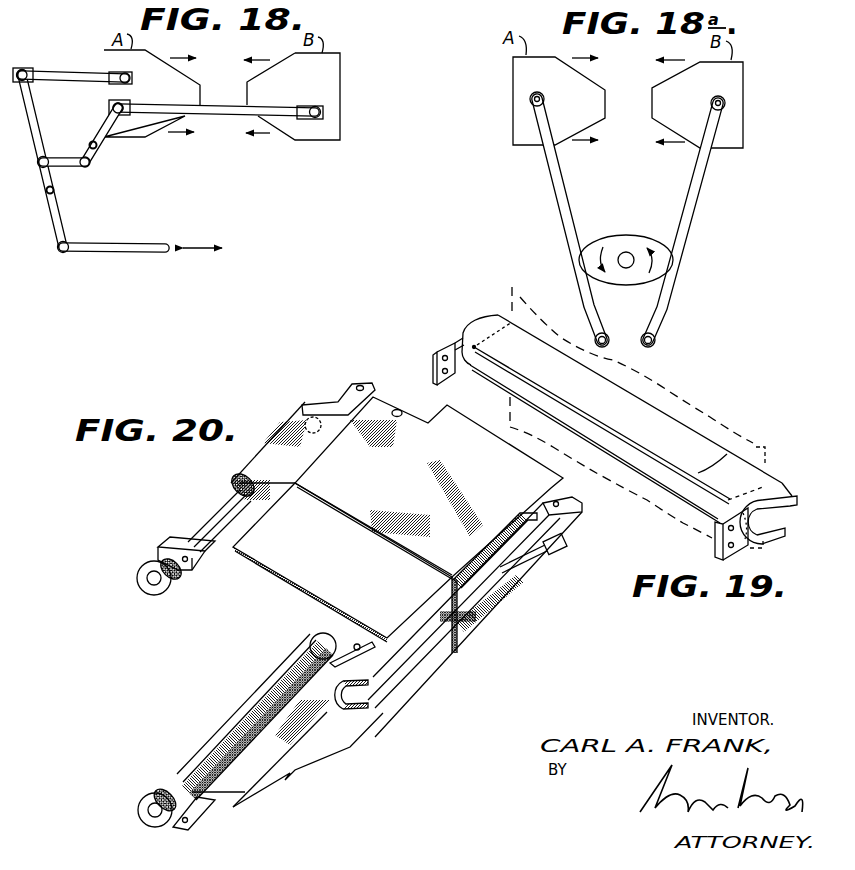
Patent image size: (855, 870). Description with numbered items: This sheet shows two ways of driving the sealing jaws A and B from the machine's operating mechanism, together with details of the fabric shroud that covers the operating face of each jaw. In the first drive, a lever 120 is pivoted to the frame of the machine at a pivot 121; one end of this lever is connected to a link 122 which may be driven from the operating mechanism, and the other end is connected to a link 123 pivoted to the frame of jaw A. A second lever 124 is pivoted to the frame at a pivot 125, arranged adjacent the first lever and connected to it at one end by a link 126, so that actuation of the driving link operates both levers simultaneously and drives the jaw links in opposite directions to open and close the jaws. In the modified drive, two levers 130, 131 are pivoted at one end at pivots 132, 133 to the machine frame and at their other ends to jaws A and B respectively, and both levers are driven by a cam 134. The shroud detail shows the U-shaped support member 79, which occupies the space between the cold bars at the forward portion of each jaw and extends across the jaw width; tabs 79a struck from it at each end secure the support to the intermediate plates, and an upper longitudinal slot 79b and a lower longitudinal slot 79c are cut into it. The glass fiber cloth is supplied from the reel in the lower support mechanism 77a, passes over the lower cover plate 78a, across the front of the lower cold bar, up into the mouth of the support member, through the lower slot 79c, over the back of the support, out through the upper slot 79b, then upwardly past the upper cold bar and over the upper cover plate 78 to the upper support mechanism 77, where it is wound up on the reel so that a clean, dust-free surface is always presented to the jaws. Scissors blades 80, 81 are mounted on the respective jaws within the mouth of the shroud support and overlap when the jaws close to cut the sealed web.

In FIG. 20, the upper support mechanism 77 is at (215, 507).
In FIG. 20, the lower support mechanism 77a is at (212, 742).
In FIG. 20, the upper cover plate 78 is at (352, 578).
In FIG. 20, the lower cover plate 78a is at (347, 749).
In FIG. 19, the U-shaped support member 79 is at (677, 428).
In FIG. 19, the tabs 79a is at (447, 350).
In FIG. 19, the upper longitudinal slot 79b is at (767, 430).
In FIG. 19, the lower longitudinal slot 79c is at (680, 495).
In FIG. 20, the lower longitudinal slot 79c is at (370, 698).
In FIG. 20, the scissors blade 80 is at (570, 497).
In FIG. 20, the scissors blade 81 is at (582, 521).
In FIG. 18, the lever 120 is at (44, 139).
In FIG. 18, the pivot 121 is at (55, 192).
In FIG. 18, the link 122 is at (150, 245).
In FIG. 18, the link 123 is at (78, 60).
In FIG. 18, the lever 124 is at (108, 130).
In FIG. 18, the pivot 125 is at (96, 148).
In FIG. 18, the link 126 is at (73, 168).
In FIG. 18A, the lever 130 is at (552, 178).
In FIG. 18A, the lever 131 is at (700, 189).
In FIG. 18A, the pivot 132 is at (590, 333).
In FIG. 18A, the pivot 133 is at (660, 336).
In FIG. 18A, the cam 134 is at (622, 237).